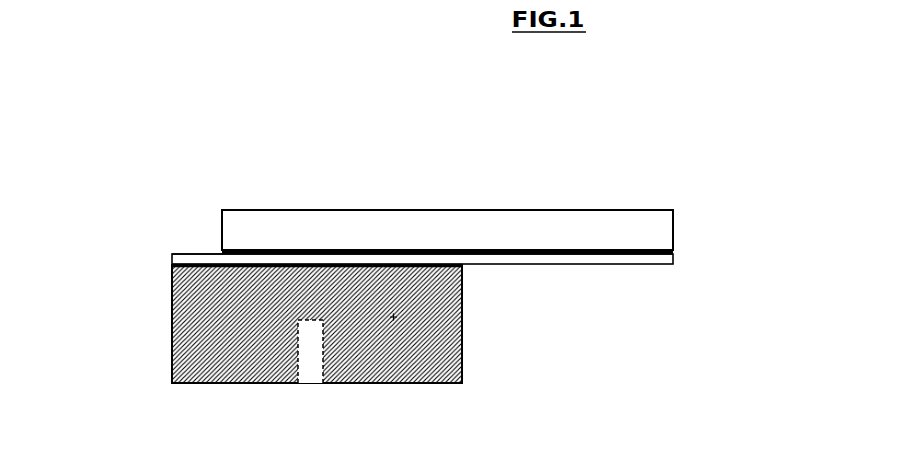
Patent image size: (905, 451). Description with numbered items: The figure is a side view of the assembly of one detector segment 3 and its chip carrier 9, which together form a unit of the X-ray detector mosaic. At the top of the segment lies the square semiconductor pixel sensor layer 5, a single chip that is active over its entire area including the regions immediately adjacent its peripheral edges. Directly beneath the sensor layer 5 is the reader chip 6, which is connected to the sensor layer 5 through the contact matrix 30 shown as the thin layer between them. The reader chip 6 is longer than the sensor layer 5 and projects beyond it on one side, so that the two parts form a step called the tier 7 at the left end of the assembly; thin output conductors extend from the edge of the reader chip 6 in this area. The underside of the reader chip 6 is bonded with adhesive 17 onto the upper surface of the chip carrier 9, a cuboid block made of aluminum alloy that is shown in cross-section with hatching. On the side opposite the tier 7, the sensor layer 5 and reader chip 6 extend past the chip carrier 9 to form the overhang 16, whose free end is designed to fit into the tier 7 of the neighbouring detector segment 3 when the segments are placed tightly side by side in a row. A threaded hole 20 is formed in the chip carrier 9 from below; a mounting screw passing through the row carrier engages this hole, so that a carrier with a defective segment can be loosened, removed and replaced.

The detector segment 3 is at (701, 203).
The sensor layer 5 is at (494, 222).
The reader chip 6 is at (613, 260).
The tier 7 is at (201, 227).
The chip carrier 9 is at (183, 352).
The overhang 16 is at (565, 276).
The adhesive 17 is at (187, 282).
The threaded hole 20 is at (308, 363).
The contact matrix 30 is at (674, 250).